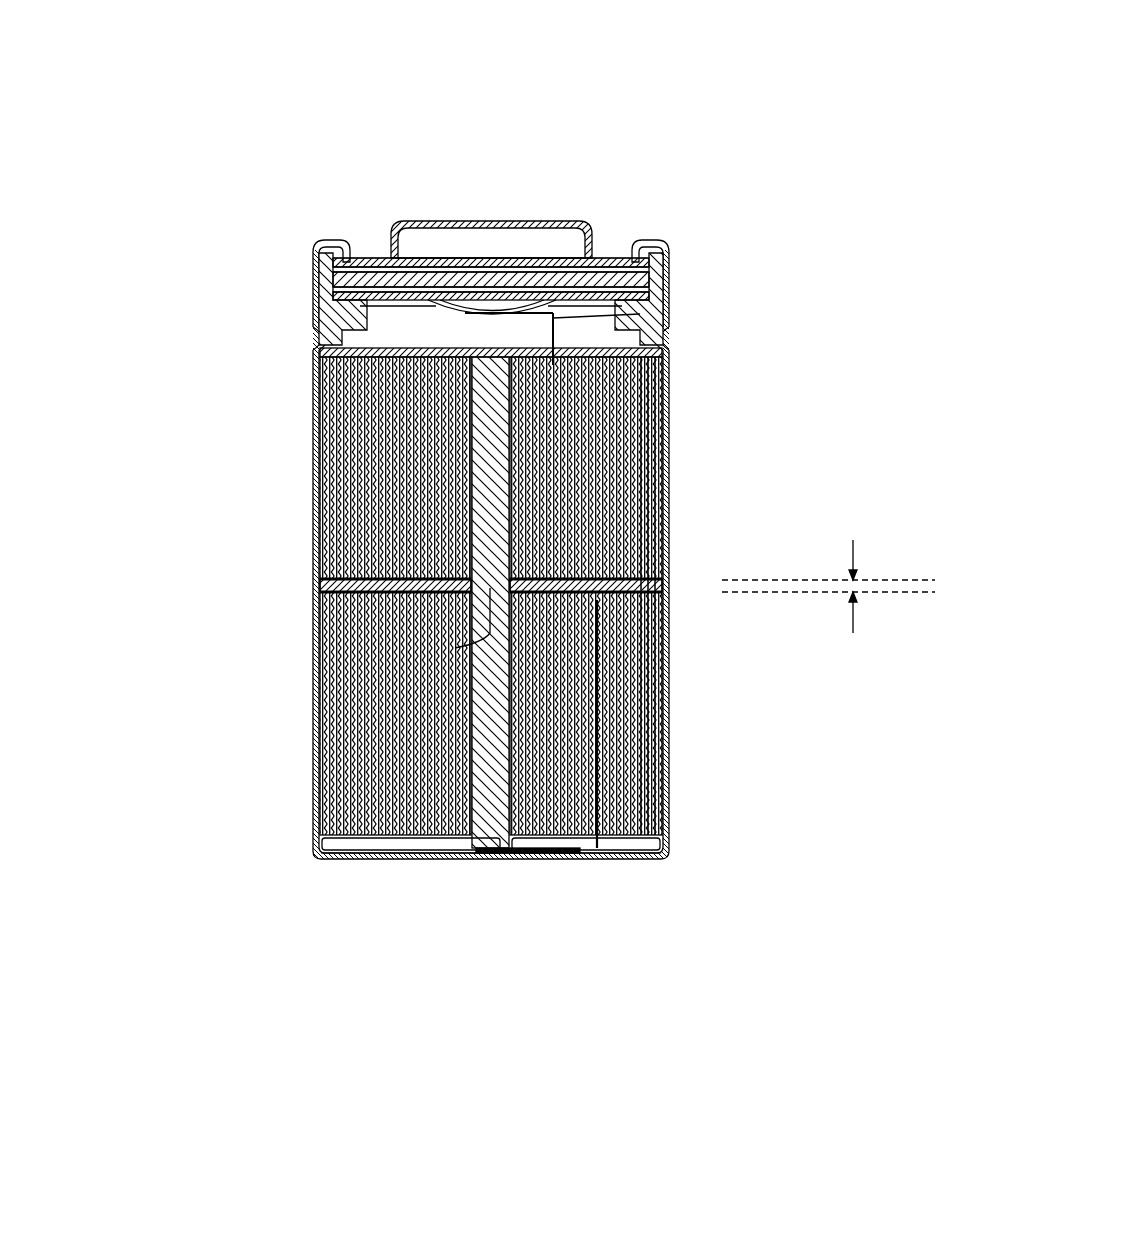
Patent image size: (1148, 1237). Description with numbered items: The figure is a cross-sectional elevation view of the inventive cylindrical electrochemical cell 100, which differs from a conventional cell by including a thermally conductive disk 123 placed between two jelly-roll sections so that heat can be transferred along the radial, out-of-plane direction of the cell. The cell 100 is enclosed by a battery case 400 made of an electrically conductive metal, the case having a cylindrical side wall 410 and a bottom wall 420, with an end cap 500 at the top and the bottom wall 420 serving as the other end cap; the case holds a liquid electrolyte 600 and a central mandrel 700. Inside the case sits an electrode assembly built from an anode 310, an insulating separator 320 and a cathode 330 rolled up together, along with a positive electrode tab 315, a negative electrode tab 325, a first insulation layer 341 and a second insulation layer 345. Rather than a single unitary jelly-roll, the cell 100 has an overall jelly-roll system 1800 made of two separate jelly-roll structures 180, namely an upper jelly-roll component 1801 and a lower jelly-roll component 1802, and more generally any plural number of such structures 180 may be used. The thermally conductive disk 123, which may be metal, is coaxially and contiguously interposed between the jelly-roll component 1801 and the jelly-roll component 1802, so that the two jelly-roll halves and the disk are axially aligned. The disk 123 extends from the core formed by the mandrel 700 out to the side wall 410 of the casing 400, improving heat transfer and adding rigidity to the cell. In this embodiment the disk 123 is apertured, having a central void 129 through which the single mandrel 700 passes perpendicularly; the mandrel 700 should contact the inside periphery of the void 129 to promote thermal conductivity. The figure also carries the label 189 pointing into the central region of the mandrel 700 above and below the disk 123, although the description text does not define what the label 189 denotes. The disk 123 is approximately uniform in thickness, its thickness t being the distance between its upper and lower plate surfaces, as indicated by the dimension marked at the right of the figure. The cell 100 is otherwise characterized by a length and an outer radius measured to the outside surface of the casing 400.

The cylindrical cell 100 is at (338, 124).
The end cap 500 is at (452, 210).
The positive electrode tab 315 is at (666, 324).
The first insulation layer 341 is at (668, 348).
The insulating separator 320 is at (666, 393).
The core hole 189 is at (500, 408).
The cathode 330 is at (666, 435).
The anode 310 is at (664, 468).
The second insulation layer 345 is at (578, 866).
The negative electrode tab 325 is at (690, 868).
The side wall 410 is at (318, 390).
The bottom wall 420 is at (340, 861).
The battery case 400 is at (204, 390).
The jelly-roll system 1800 is at (270, 603).
The jelly-roll component 1801 is at (355, 489).
The lower jelly-roll component 1802 is at (360, 705).
The jelly-roll structure 180 is at (586, 602).
The central void 129 is at (455, 648).
The thermally conductive disk 123 is at (612, 593).
The electrolyte 600 is at (466, 846).
The mandrel 700 is at (524, 852).